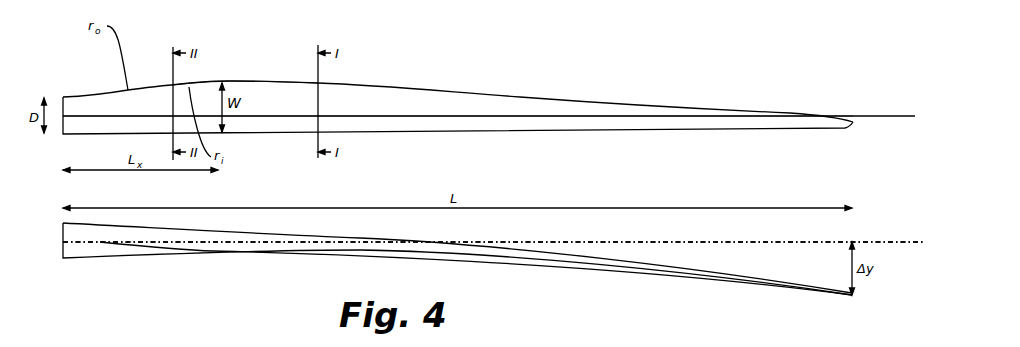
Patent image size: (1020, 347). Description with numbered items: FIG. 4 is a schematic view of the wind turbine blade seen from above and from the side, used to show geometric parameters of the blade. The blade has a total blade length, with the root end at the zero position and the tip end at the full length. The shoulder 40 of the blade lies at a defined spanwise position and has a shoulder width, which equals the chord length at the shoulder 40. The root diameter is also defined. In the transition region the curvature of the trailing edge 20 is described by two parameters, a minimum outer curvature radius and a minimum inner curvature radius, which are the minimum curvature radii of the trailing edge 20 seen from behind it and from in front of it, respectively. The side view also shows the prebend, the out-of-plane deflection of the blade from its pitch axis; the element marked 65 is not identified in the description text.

The shoulder 40 is at (222, 82).
The trailing edge 20 is at (342, 252).
The neutral axis line 65 is at (214, 252).